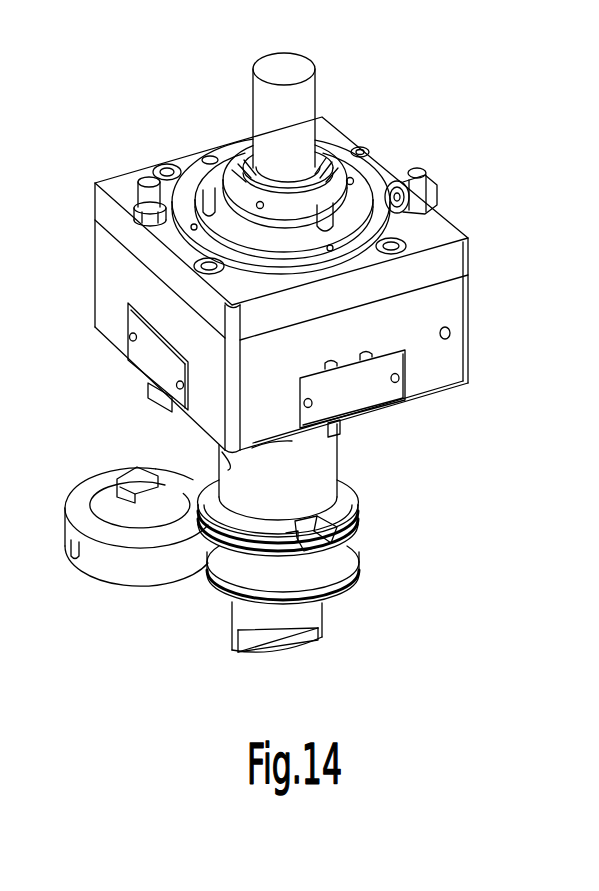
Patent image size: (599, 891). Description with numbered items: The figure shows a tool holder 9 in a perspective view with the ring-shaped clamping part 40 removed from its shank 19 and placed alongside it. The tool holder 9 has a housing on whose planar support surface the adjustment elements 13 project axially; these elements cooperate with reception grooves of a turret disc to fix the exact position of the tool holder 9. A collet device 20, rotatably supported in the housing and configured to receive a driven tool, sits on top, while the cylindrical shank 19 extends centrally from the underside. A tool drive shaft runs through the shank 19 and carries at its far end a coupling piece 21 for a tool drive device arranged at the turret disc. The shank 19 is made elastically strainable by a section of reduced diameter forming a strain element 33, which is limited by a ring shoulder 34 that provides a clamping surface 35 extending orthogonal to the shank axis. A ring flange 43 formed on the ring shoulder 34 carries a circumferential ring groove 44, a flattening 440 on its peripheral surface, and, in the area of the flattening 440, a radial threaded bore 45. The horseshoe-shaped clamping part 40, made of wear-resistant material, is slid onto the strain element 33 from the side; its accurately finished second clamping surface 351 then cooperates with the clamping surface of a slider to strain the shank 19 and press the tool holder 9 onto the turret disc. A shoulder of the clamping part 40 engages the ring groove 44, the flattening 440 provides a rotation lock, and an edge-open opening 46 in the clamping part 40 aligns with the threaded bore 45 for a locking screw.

The tool holder 9 is at (393, 147).
The collet device 20 is at (233, 143).
The adjustment elements 13 is at (350, 430).
The strain element 33 is at (238, 473).
The shank 19 is at (350, 511).
The clamping surface 35 is at (335, 490).
The ring flange 43 is at (335, 520).
The flattening 440 is at (330, 528).
The radial threaded bore 45 is at (330, 545).
The ring groove 44 is at (262, 553).
The ring shoulder 34 is at (242, 563).
The coupling piece 21 is at (310, 615).
The ring-shaped clamping part 40 is at (111, 597).
The second clamping surface 351 is at (75, 513).
The opening 46 is at (77, 560).